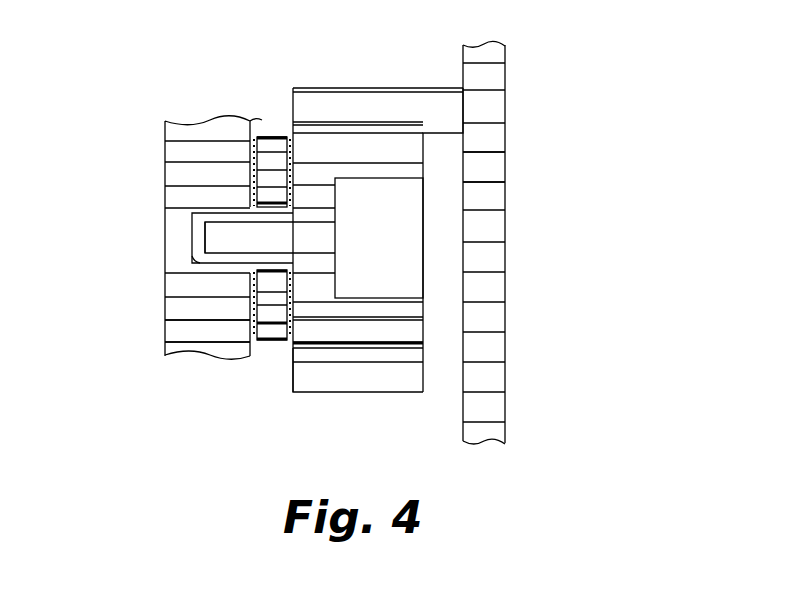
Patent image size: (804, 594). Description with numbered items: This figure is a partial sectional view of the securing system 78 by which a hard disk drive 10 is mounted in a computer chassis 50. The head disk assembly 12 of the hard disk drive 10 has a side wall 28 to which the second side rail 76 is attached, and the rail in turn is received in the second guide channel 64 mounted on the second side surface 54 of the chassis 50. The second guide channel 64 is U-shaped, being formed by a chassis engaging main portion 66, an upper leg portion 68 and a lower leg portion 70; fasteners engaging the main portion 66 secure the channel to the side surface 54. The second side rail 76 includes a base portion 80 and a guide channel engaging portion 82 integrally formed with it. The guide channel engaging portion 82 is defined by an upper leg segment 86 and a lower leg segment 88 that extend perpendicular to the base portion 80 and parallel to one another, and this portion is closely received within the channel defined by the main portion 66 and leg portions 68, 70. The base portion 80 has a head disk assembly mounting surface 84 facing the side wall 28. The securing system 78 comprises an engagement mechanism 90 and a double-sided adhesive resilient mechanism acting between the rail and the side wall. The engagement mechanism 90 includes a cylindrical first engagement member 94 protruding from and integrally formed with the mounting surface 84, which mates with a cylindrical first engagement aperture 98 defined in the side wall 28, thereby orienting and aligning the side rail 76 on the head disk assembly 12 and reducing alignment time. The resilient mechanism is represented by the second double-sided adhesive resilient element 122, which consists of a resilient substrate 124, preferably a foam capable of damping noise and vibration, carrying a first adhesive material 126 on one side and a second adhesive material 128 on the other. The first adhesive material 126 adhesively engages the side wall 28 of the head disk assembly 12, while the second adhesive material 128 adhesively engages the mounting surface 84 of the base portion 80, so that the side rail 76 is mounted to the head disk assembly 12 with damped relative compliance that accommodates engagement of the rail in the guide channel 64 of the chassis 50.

The hard disk drive 10 is at (158, 377).
The head disk assembly 12 is at (166, 144).
The layer of first component 28 is at (175, 305).
The chassis 50 is at (503, 73).
The second side surface 54 is at (497, 163).
The second guide channel 64 is at (349, 86).
The chassis engaging main portion 66 is at (450, 280).
The upper leg portion 68 is at (428, 95).
The lower leg portion 70 is at (317, 382).
The second side rail 76 is at (398, 349).
The securing system 78 is at (255, 102).
The base portion 80 is at (338, 245).
The guide channel engaging portion 82 is at (398, 188).
The head disk assembly mounting surface 84 is at (282, 341).
The upper leg segment 86 is at (377, 170).
The lower leg segment 88 is at (365, 330).
The engagement mechanism 90 is at (203, 233).
The first engagement member 94 is at (215, 255).
The first engagement aperture 98 is at (192, 258).
The second double-sided adhesive resilient element 122 is at (268, 341).
The resilient substrate 124 is at (260, 148).
The first adhesive material 126 is at (250, 337).
The second adhesive material 128 is at (290, 292).